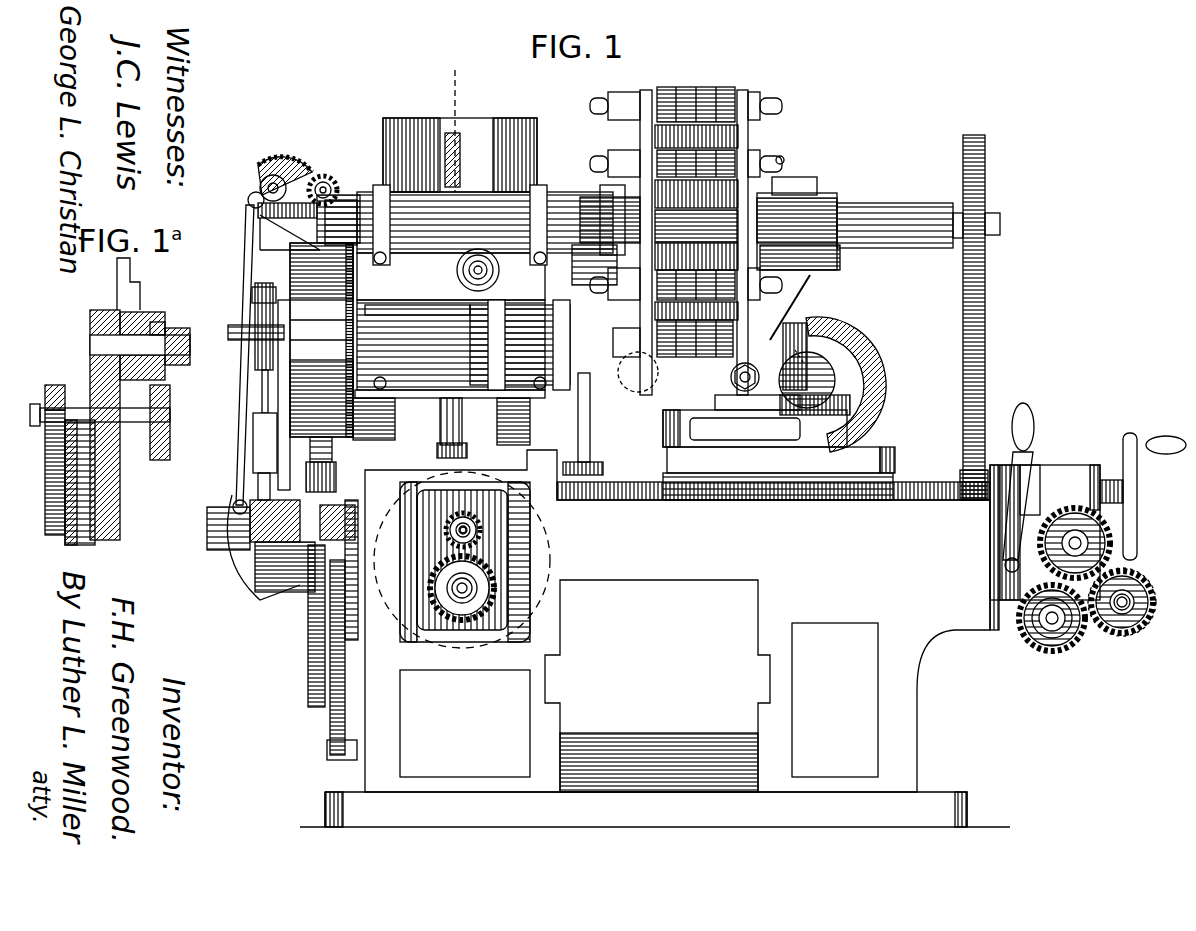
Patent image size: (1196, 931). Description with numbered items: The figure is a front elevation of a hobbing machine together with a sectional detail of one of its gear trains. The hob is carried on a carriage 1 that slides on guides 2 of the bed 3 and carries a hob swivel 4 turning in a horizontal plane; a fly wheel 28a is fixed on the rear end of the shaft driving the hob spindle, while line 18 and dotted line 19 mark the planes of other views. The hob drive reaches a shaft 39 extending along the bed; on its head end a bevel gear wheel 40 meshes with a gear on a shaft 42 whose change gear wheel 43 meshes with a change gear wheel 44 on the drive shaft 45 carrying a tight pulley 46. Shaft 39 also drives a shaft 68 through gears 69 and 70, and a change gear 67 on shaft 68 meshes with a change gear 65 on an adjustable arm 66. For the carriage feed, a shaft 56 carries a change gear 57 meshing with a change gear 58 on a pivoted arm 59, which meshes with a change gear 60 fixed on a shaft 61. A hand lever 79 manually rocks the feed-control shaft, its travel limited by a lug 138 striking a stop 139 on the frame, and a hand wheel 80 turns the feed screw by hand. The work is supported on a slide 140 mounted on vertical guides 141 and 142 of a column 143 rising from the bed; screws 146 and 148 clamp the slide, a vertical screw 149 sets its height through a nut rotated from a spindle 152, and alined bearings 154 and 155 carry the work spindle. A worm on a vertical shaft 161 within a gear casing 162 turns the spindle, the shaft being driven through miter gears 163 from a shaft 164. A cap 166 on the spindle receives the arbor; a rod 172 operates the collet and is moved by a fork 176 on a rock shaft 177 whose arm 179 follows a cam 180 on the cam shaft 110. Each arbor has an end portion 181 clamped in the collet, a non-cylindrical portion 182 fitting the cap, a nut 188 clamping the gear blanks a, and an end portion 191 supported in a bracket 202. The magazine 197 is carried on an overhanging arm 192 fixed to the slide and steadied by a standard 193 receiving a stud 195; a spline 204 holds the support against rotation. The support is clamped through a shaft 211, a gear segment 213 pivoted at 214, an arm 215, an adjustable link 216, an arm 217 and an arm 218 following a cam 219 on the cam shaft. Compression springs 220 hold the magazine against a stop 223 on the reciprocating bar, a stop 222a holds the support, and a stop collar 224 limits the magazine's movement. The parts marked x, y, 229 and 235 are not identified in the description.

In FIG. 1, the carriage 1 is at (895, 456).
In FIG. 1, the guides 2 is at (905, 500).
In FIG. 1, the bed 3 is at (945, 636).
In FIG. 1, the hob swivel 4 is at (663, 434).
In FIG. 1, the section line 18 is at (197, 320).
In FIG. 1, the dotted section line 19 is at (467, 68).
In FIG. 1, the fly wheel 28a is at (855, 343).
In FIG. 1a, the shaft 39 is at (92, 345).
In FIG. 1a, the bevel gear wheel 40 is at (176, 330).
In FIG. 1, the shaft 42 is at (470, 525).
In FIG. 1, the change gear wheel 43 is at (488, 540).
In FIG. 1, the change gear wheel 44 is at (445, 620).
In FIG. 1, the drive shaft 45 is at (462, 586).
In FIG. 1, the tight pulley 46 is at (560, 640).
In FIG. 1, the shaft 56 is at (1128, 570).
In FIG. 1, the change gear 57 is at (1066, 512).
In FIG. 1, the change gear 58 is at (1120, 636).
In FIG. 1, the pivoted arm 59 is at (1154, 604).
In FIG. 1, the change gear 60 is at (1057, 652).
In FIG. 1, the shaft 61 is at (1030, 652).
In FIG. 1, the change gear 65 is at (310, 705).
In FIG. 1a, the change gear 65 is at (52, 536).
In FIG. 1, the adjustable arm 66 is at (336, 725).
In FIG. 1a, the adjustable arm 66 is at (80, 542).
In FIG. 1, the change gear 67 is at (330, 610).
In FIG. 1a, the change gear 67 is at (52, 392).
In FIG. 1a, the shaft 68 is at (46, 418).
In FIG. 1a, the gear 69 is at (166, 446).
In FIG. 1a, the gear 70 is at (155, 325).
In FIG. 1, the hand lever 79 is at (1036, 440).
In FIG. 1, the hand wheel 80 is at (1138, 492).
In FIG. 1, the cam shaft 110 is at (207, 530).
In FIG. 1, the lug 138 is at (1000, 555).
In FIG. 1, the stop 139 is at (1000, 548).
In FIG. 1, the slide 140 is at (483, 318).
In FIG. 1, the vertical guide 141 is at (418, 135).
In FIG. 1, the vertical guide 142 is at (512, 135).
In FIG. 1, the column 143 is at (383, 152).
In FIG. 1, the screws 146 is at (538, 255).
In FIG. 1, the screws 148 is at (384, 262).
In FIG. 1, the vertical screw 149 is at (456, 133).
In FIG. 1, the spindle 152 is at (478, 262).
In FIG. 1, the bearing 154 is at (372, 333).
In FIG. 1, the bearing 155 is at (520, 345).
In FIG. 1, the vertical shaft 161 is at (258, 466).
In FIG. 1, the gear casing 162 is at (321, 340).
In FIG. 1, the miter gears 163 is at (345, 522).
In FIG. 1, the shaft 164 is at (648, 95).
In FIG. 1, the cap 166 is at (640, 330).
In FIG. 1, the rod 172 is at (287, 345).
In FIG. 1, the fork 176 is at (268, 285).
In FIG. 1, the vertical rock shaft 177 is at (256, 296).
In FIG. 1, the arm 179 is at (253, 445).
In FIG. 1, the cam 180 is at (275, 570).
In FIG. 1, the end portion 181 is at (598, 98).
In FIG. 1, the non-cylindrical portion 182 is at (628, 100).
In FIG. 1, the nut 188 is at (762, 98).
In FIG. 1, the end portion 191 is at (784, 106).
In FIG. 1, the overhanging arm 192 is at (886, 205).
In FIG. 1, the standard 193 is at (985, 340).
In FIG. 1, the stud 195 is at (1000, 224).
In FIG. 1, the magazine 197 is at (756, 196).
In FIG. 1, the bracket 202 is at (795, 330).
In FIG. 1, the spline 204 is at (840, 260).
In FIG. 1, the shaft 211 is at (322, 178).
In FIG. 1, the gear segment 213 is at (280, 150).
In FIG. 1, the pivot 214 is at (268, 185).
In FIG. 1, the arm 215 is at (250, 198).
In FIG. 1, the link 216 is at (248, 226).
In FIG. 1, the arm 217 is at (234, 505).
In FIG. 1, the arm 218 is at (260, 548).
In FIG. 1, the cam 219 is at (300, 580).
In FIG. 1, the compression springs 220 is at (815, 215).
In FIG. 1, the stop 222a is at (770, 160).
In FIG. 1, the stop 223 is at (605, 196).
In FIG. 1, the stop collar 224 is at (658, 220).
In FIG. 1, the collar 229 is at (600, 186).
In FIG. 1, the support post 235 is at (590, 405).
In FIG. 1, the spur gear blanks a is at (722, 90).
In FIG. 1, the reference circle x is at (613, 388).
In FIG. 1, the reference line y is at (850, 330).